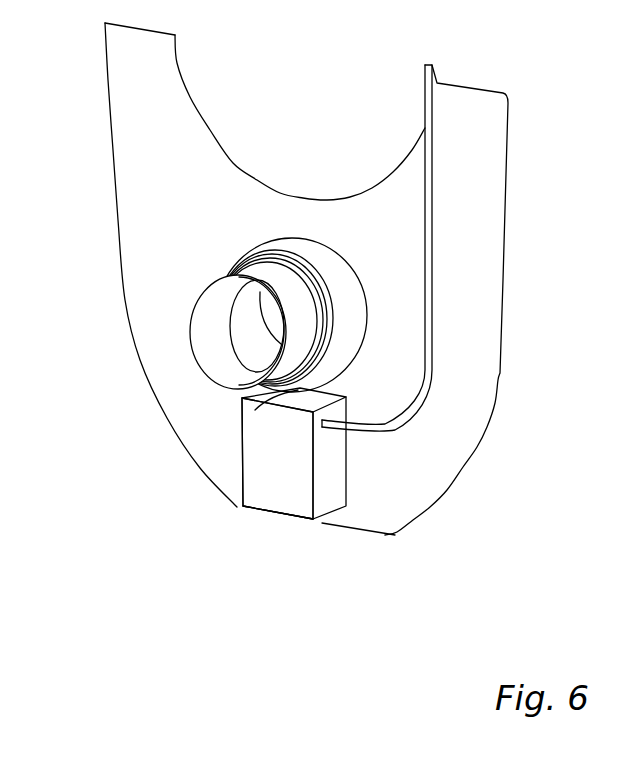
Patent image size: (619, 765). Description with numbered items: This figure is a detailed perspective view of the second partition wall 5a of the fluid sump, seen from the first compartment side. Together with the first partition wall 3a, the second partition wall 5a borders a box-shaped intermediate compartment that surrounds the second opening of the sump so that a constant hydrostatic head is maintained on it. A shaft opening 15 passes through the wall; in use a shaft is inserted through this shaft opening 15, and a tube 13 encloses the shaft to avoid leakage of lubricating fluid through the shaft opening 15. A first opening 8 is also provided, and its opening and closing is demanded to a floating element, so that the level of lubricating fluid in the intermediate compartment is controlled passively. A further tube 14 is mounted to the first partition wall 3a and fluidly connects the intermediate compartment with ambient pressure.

The second partition wall 5a is at (472, 220).
The tube 14 is at (430, 333).
The tube 13 is at (273, 283).
The shaft opening 15 is at (220, 338).
The first opening 8 is at (242, 432).
The first partition wall 3a is at (265, 482).